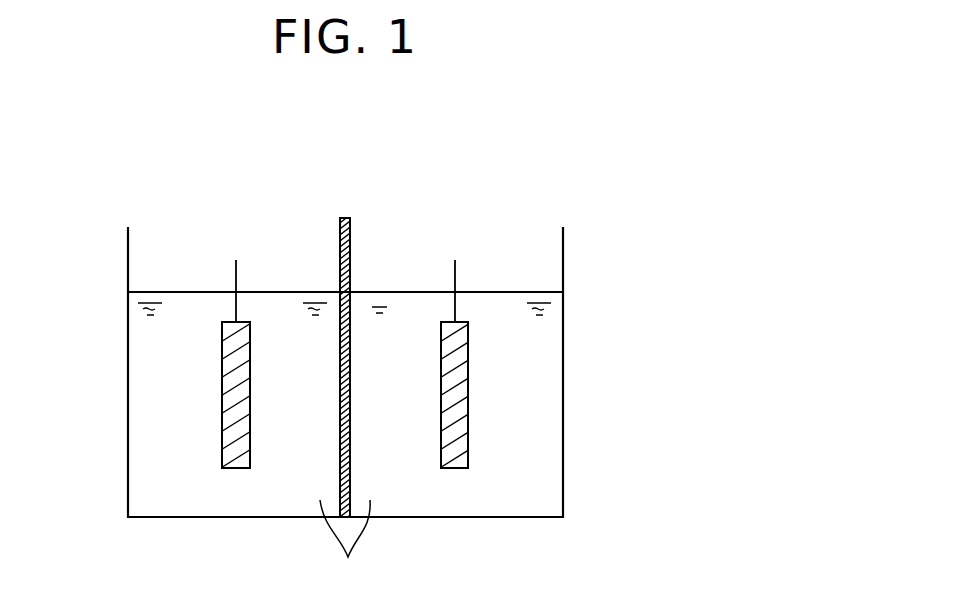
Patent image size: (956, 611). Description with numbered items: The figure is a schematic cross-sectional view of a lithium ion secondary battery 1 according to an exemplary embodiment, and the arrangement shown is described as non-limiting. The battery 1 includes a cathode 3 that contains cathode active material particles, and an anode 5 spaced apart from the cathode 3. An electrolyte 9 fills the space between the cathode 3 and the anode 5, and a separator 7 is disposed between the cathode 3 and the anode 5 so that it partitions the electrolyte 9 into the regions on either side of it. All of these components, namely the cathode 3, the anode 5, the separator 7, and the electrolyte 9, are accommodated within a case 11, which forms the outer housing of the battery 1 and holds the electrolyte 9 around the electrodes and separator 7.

The lithium ion secondary battery 1 is at (550, 178).
The cathode 3 is at (259, 321).
The anode 5 is at (479, 321).
The separator 7 is at (345, 217).
The electrolyte 9 is at (345, 546).
The case 11 is at (563, 425).